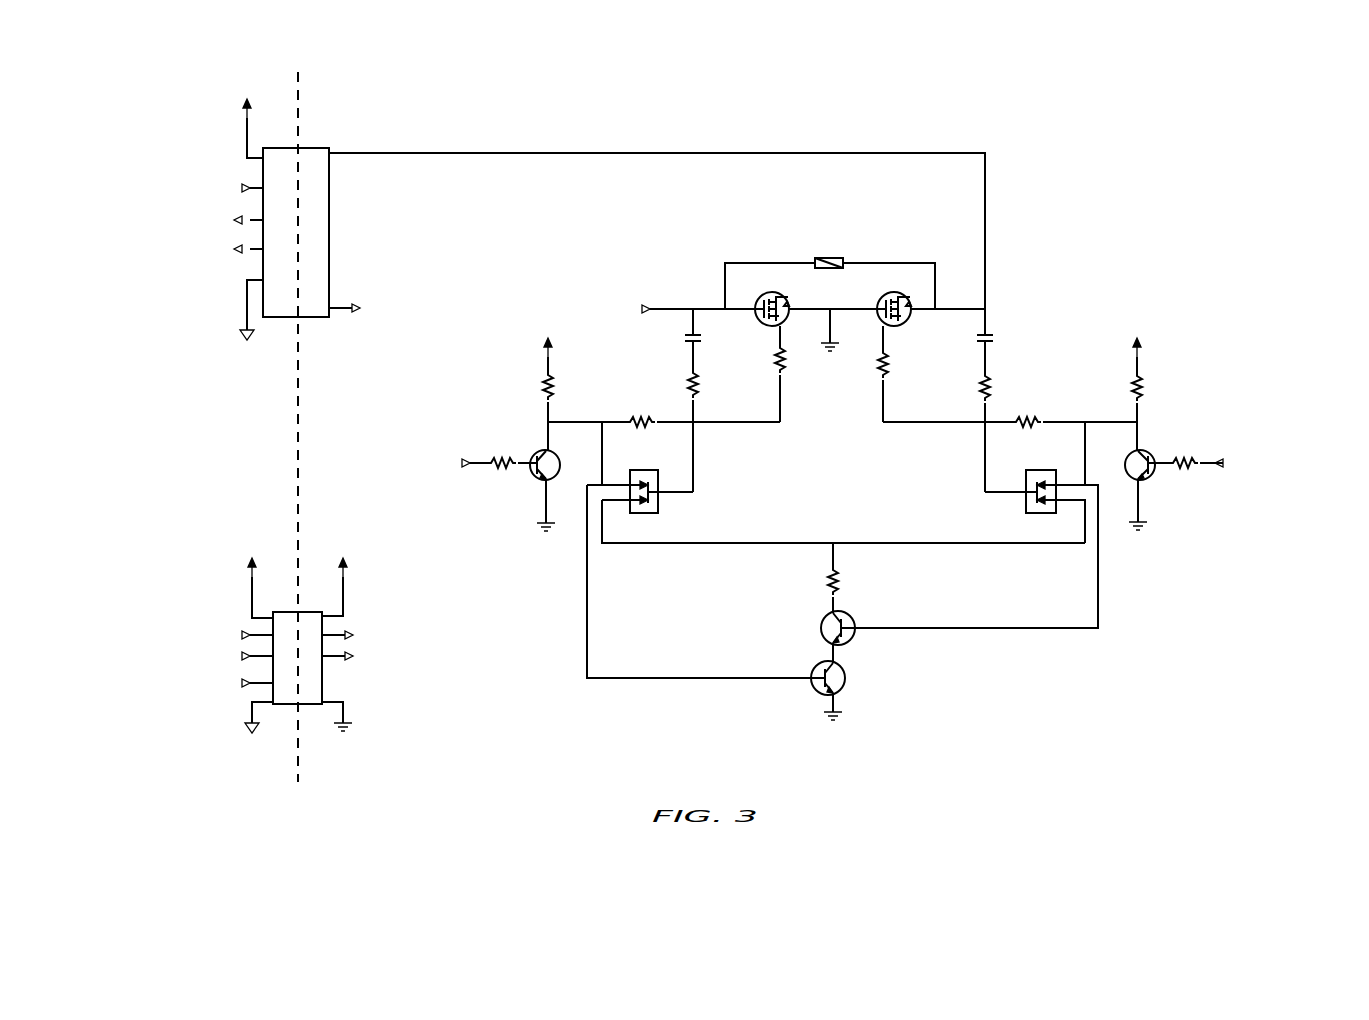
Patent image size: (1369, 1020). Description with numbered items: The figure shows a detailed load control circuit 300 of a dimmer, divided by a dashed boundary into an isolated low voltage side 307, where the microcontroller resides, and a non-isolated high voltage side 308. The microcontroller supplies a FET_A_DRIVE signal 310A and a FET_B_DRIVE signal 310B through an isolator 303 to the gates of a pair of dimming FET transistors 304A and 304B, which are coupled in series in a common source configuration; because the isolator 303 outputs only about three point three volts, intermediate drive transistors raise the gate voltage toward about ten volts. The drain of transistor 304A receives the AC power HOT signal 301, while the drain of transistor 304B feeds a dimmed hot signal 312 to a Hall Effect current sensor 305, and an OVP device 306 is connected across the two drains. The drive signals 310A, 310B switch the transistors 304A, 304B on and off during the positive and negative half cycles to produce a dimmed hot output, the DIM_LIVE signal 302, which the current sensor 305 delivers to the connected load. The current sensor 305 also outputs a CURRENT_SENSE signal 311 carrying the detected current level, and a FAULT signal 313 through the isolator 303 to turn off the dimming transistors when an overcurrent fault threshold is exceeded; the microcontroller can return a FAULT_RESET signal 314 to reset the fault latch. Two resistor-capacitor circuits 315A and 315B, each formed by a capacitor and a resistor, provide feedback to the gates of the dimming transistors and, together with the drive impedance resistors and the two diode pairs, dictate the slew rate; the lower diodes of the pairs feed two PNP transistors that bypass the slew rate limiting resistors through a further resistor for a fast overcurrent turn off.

The load control circuit 300 is at (694, 418).
The AC power HOT signal 301 is at (612, 290).
The dimmed hot output signal (DIM_LIVE signal) 302 is at (398, 293).
The isolator 303 is at (231, 653).
The dimming FET transistor 304A is at (772, 301).
The dimming FET transistor 304B is at (895, 301).
The Hall Effect current sensor 305 is at (268, 229).
The OVP device 306 is at (830, 252).
The isolated low voltage side 307 is at (167, 78).
The high voltage side 308 is at (385, 78).
The FET_A_DRIVE signal 310A is at (377, 628).
The FET_B_DRIVE signal 310B is at (468, 658).
The CURRENT_SENSE signal 311 is at (156, 262).
The dimmed hot signal 312 is at (645, 151).
The FAULT signal 313 is at (136, 215).
The FAULT_RESET signal 314 is at (153, 180).
The RC circuit 315A is at (683, 328).
The RC circuit 315B is at (1000, 316).